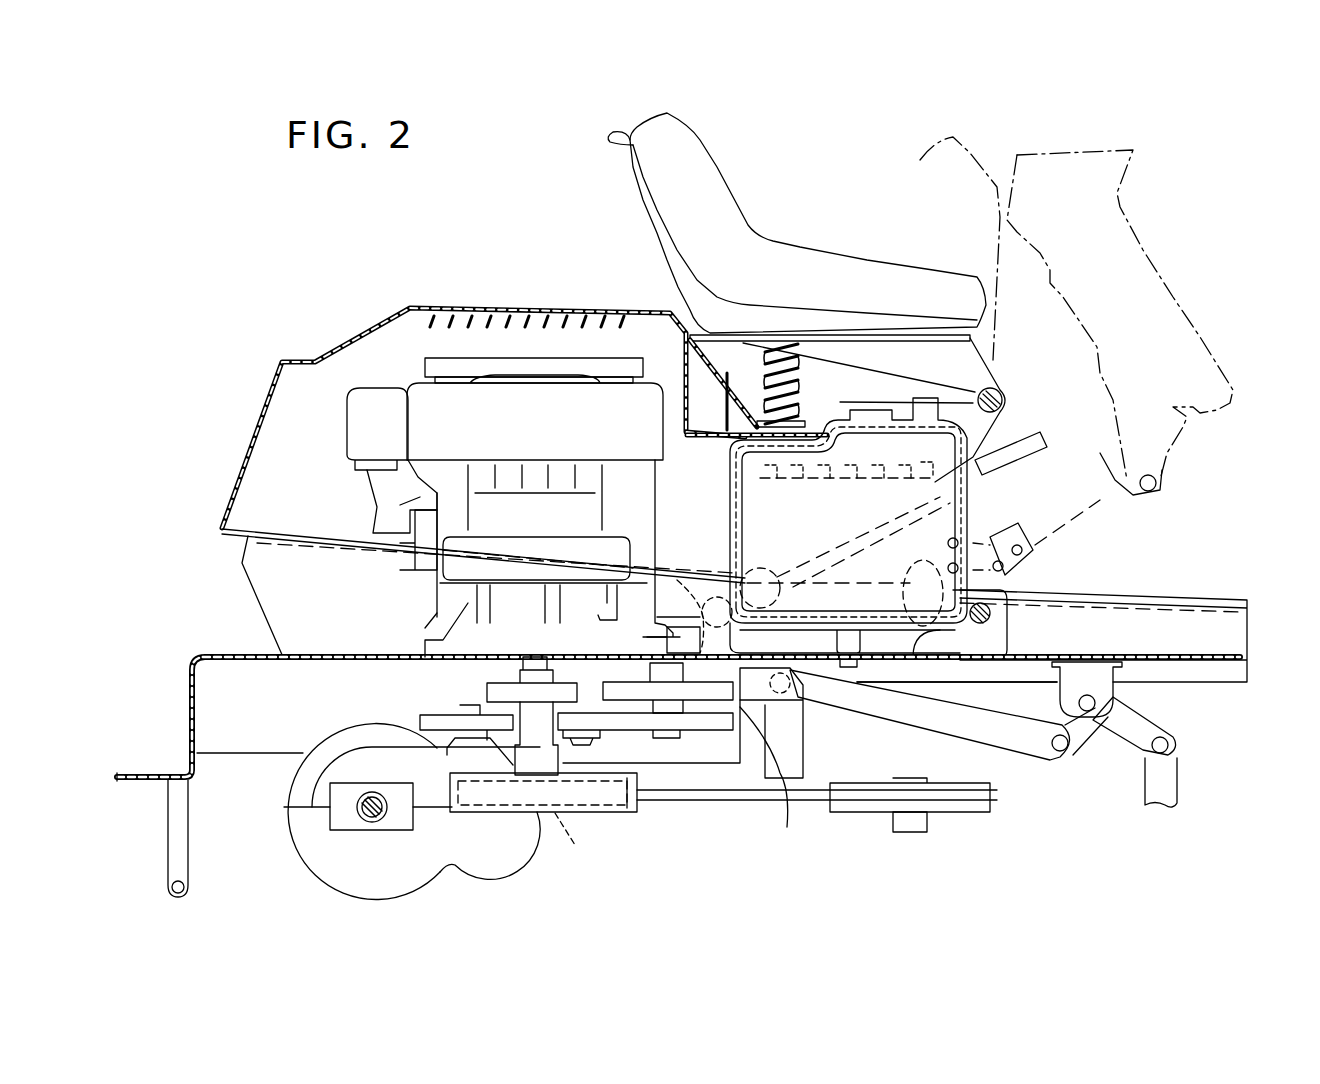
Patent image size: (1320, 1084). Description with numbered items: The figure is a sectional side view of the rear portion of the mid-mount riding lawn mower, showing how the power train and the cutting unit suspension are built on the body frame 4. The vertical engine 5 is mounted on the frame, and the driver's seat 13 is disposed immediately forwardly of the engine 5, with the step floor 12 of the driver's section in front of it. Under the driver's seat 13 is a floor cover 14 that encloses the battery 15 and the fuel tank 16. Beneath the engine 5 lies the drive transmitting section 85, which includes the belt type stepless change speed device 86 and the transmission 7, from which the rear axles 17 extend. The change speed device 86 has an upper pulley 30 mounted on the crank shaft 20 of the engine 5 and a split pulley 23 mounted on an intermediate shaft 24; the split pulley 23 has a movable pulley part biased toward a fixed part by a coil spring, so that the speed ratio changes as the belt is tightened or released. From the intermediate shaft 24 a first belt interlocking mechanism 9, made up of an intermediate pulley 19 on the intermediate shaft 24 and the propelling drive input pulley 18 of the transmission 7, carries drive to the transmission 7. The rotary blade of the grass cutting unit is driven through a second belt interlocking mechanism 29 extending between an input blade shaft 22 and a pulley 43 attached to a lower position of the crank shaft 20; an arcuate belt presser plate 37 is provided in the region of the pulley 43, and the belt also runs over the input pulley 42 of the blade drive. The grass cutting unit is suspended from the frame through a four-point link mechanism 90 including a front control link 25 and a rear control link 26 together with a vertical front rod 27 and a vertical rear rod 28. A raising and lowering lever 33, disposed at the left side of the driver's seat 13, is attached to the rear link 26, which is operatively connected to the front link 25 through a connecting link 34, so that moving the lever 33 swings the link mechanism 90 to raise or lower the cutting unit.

The body frame 4 is at (263, 602).
The vertical engine 5 is at (652, 483).
The transmission 7 is at (300, 850).
The first belt interlocking mechanism 9 is at (643, 745).
The step floor 12 is at (1223, 600).
The driver's seat 13 is at (882, 268).
The floor cover 14 is at (967, 515).
The battery 15 is at (867, 463).
The fuel tank 16 is at (983, 397).
The rear axles 17 is at (369, 817).
The propelling drive input pulley 18 is at (420, 712).
The intermediate pulley 19 is at (712, 735).
The crank shaft 20 is at (528, 648).
The input blade shaft 22 is at (922, 817).
The split pulley 23 is at (774, 784).
The intermediate shaft 24 is at (670, 735).
The front control link 25 is at (1147, 727).
The rear control link 26 is at (680, 580).
The front rod 27 is at (1173, 773).
The rear rod 28 is at (798, 740).
The second belt interlocking mechanism 29 is at (823, 818).
The upper pulley 30 is at (437, 627).
The raising and lowering lever 33 is at (1022, 440).
The connecting link 34 is at (1000, 740).
The arcuate belt presser plate 37 is at (540, 813).
The input pulley 42 is at (983, 813).
The pulley 43 is at (582, 847).
The drive transmitting section 85 is at (352, 711).
The belt type stepless change speed device 86 is at (461, 697).
The four-point link mechanism 90 is at (1043, 693).